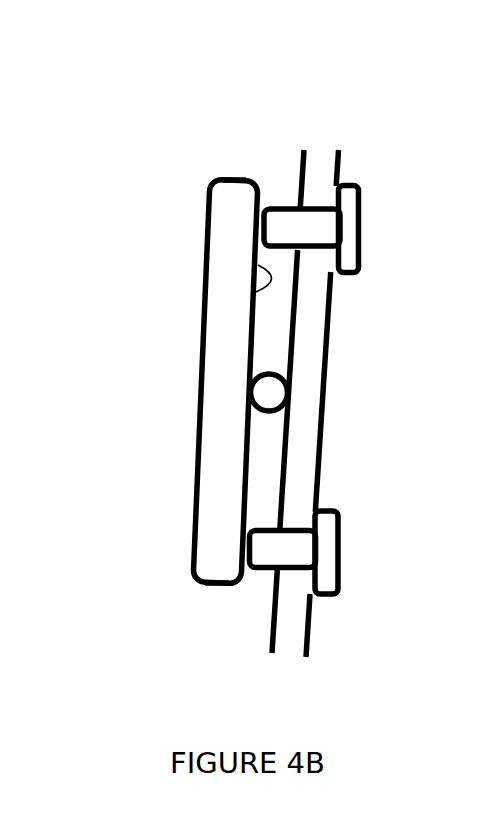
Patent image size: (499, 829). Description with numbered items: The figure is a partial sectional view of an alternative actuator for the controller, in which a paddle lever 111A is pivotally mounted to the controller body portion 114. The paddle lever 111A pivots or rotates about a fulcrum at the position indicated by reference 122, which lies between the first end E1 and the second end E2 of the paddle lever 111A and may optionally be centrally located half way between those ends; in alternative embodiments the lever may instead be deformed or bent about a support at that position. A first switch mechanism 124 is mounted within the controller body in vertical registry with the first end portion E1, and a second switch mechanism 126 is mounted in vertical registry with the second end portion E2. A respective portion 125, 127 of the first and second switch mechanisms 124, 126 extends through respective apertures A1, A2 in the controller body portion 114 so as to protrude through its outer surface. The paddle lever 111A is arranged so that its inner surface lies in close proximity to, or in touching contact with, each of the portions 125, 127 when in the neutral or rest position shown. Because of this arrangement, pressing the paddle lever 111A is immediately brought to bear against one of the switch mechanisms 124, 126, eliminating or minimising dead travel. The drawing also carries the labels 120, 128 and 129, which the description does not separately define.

The paddle lever 111A is at (249, 364).
The first end E1 is at (230, 181).
The second end E2 is at (203, 583).
The portion of first switch mechanism 125 is at (290, 223).
The first switch mechanism 124 is at (348, 220).
The gap / slot 128 is at (258, 265).
The elongate member 120 is at (223, 333).
The side surface of elongate member 129 is at (200, 405).
The controller body portion 114 is at (308, 323).
The aperture A1 is at (305, 246).
The aperture A2 is at (280, 525).
The fulcrum position 122 is at (272, 397).
The portion of second switch mechanism 127 is at (267, 547).
The second switch mechanism 126 is at (322, 537).